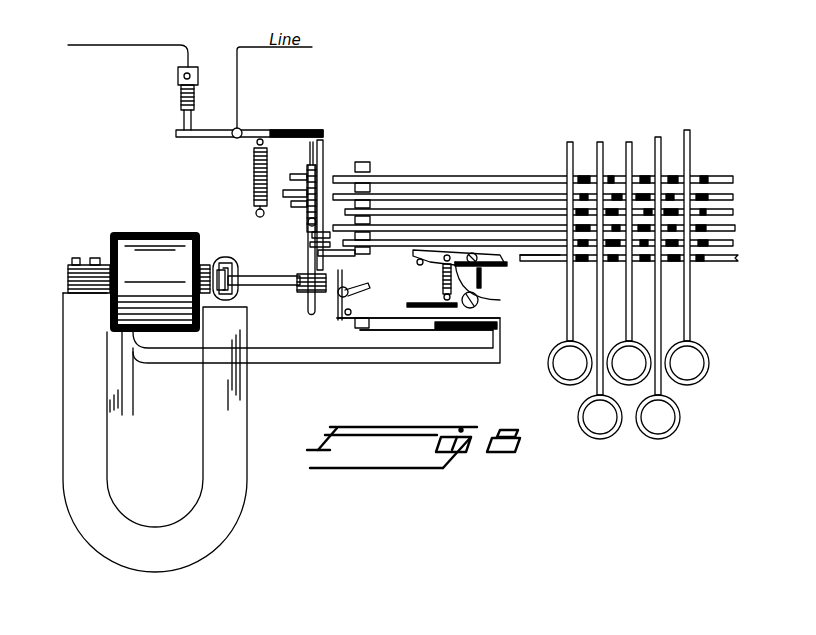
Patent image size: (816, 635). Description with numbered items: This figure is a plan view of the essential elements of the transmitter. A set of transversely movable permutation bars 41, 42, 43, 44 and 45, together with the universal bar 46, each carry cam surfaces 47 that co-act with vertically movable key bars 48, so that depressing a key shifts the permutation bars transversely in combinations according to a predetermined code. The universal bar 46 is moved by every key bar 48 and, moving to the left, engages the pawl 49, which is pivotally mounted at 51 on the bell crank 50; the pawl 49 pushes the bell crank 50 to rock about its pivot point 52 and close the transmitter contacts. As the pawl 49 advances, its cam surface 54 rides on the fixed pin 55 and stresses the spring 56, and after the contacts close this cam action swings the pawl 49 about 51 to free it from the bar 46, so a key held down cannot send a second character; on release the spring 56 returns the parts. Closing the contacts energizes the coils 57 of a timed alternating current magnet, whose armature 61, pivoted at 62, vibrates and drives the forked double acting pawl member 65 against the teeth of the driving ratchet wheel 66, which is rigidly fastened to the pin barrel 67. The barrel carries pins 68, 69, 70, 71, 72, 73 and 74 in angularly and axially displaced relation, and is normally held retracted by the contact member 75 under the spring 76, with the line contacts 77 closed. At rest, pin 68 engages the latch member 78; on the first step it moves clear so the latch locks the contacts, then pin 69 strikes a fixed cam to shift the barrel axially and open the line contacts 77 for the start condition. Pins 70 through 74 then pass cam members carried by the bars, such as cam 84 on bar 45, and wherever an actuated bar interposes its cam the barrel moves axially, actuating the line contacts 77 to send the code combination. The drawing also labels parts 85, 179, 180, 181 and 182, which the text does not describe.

The permutation bar 41 is at (538, 261).
The permutation bar 42 is at (530, 225).
The permutation bar 43 is at (490, 209).
The permutation bar 44 is at (455, 194).
The permutation bar 45 is at (410, 176).
The universal bar 46 is at (540, 262).
The cam surfaces 47 is at (614, 178).
The key bars 48 is at (700, 308).
The pawl 49 is at (479, 300).
The bell crank 50 is at (415, 303).
The pivot 51 is at (480, 258).
The pivot point 52 is at (492, 303).
The cam surface 54 is at (428, 263).
The fixed pin 55 is at (372, 337).
The spring 56 is at (470, 252).
The coils 57 is at (160, 238).
The armature 61 is at (240, 297).
The armature pivot 62 is at (226, 258).
The forked double acting pawl member 65 is at (262, 280).
The driving ratchet wheel 66 is at (308, 300).
The pin barrel 67 is at (310, 245).
The pin 68 is at (338, 306).
The pin 69 is at (315, 275).
The pin 70 is at (312, 234).
The pin 71 is at (308, 222).
The pin 72 is at (318, 190).
The pin 73 is at (322, 185).
The pin 74 is at (299, 174).
The contact member 75 is at (285, 132).
The spring 76 is at (255, 183).
The line contacts 77 is at (178, 112).
The latch member 78 is at (356, 328).
The cam member 84 is at (370, 165).
The type head 85 is at (370, 187).
The type head 179 is at (370, 252).
The type head 180 is at (370, 237).
The type head 181 is at (370, 221).
The type head 182 is at (370, 206).